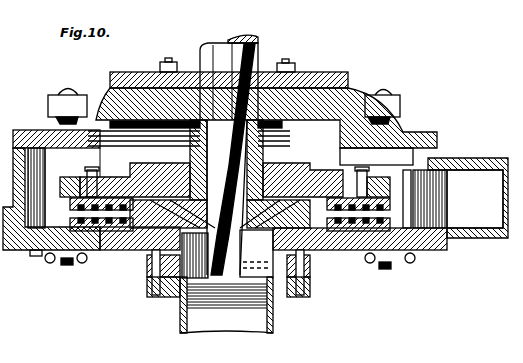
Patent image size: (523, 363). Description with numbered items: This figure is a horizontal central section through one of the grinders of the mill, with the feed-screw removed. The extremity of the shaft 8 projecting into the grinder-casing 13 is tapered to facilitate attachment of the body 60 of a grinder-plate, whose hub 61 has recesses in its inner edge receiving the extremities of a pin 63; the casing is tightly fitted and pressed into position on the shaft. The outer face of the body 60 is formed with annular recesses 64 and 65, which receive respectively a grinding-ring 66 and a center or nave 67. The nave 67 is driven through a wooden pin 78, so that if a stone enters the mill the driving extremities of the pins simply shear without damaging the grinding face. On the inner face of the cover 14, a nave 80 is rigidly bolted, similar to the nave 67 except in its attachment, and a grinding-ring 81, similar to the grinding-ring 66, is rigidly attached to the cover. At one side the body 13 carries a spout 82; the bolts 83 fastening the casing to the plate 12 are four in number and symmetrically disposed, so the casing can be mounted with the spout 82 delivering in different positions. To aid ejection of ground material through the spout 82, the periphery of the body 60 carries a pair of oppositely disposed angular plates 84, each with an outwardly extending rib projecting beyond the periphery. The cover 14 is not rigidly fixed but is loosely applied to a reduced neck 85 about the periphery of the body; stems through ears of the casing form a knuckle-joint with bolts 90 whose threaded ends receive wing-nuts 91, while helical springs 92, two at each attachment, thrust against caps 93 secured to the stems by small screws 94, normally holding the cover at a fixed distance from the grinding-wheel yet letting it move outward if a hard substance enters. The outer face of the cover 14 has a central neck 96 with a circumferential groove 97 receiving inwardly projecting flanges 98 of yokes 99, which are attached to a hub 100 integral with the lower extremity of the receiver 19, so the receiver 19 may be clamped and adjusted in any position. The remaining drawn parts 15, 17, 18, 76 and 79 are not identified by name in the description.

The shaft 8 is at (250, 42).
The plate 12 is at (345, 76).
The grinder-casing 13 is at (98, 112).
The cover 14 is at (450, 240).
The housing 15 is at (375, 160).
The bearing block 17 is at (256, 253).
The bearing 18 is at (232, 302).
The receiver 19 is at (180, 331).
The body of grinder-plate 60 is at (285, 129).
The hub 61 is at (306, 90).
The pin 63 is at (208, 120).
The annular recess 64 is at (15, 130).
The annular recess 65 is at (142, 172).
The grinding-ring 66 is at (47, 262).
The nave 67 is at (338, 291).
The sleeve 76 is at (305, 168).
The wooden pin 78 is at (211, 160).
The lower screw 79 is at (113, 232).
The nave 80 is at (118, 250).
The grinding-ring 81 is at (100, 232).
The spout 82 is at (475, 199).
The bolts 83 is at (170, 62).
The angular plates 84 is at (412, 200).
The reduced neck 85 is at (34, 252).
The bolts 90 is at (67, 267).
The wing-nuts 91 is at (80, 263).
The helical springs 92 is at (60, 121).
The caps 93 is at (58, 103).
The small screws 94 is at (68, 90).
The neck 96 is at (200, 292).
The circumferential groove 97 is at (290, 297).
The inwardly projecting flanges 98 is at (178, 300).
The yokes 99 is at (150, 262).
The hub 100 is at (152, 288).